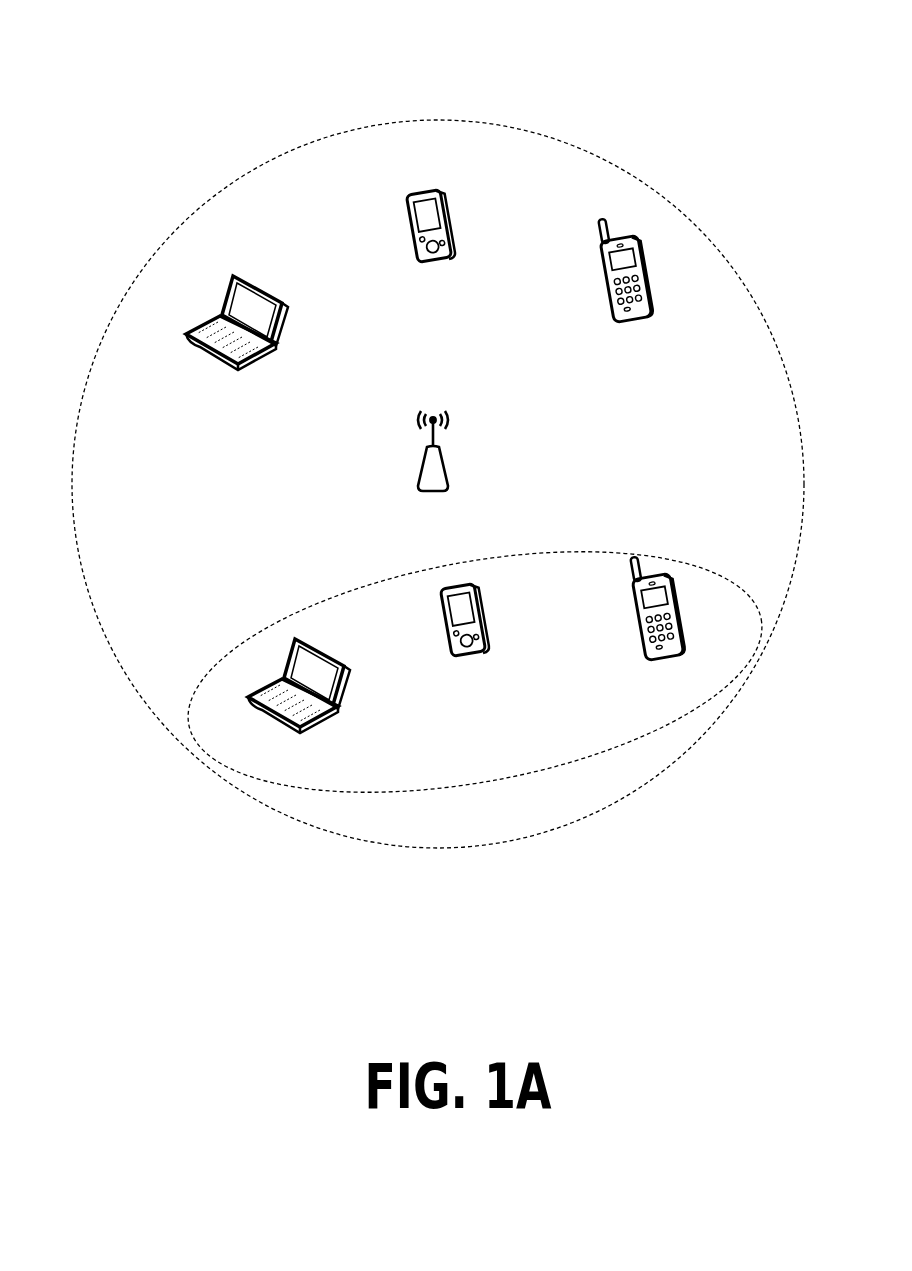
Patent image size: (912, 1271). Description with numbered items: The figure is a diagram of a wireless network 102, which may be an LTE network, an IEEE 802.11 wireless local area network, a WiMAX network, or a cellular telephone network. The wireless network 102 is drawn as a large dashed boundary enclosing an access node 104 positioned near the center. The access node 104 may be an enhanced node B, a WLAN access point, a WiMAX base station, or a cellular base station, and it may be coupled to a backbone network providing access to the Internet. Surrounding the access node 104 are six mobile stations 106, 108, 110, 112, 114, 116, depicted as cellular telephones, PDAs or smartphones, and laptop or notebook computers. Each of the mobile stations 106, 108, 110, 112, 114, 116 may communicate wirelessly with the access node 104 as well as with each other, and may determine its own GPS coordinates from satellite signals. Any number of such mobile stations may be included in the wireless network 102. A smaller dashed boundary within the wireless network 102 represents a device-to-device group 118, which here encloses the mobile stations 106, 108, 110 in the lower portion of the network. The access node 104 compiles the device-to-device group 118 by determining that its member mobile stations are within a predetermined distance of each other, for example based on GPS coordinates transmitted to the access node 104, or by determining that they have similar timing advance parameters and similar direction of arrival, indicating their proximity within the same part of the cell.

The wireless network 102 is at (255, 166).
The access node 104 is at (433, 482).
The mobile station 106 is at (660, 633).
The mobile station 108 is at (464, 651).
The mobile station 110 is at (302, 710).
The mobile station 112 is at (241, 347).
The mobile station 114 is at (431, 256).
The mobile station 116 is at (627, 294).
The device-to-device group 118 is at (321, 600).